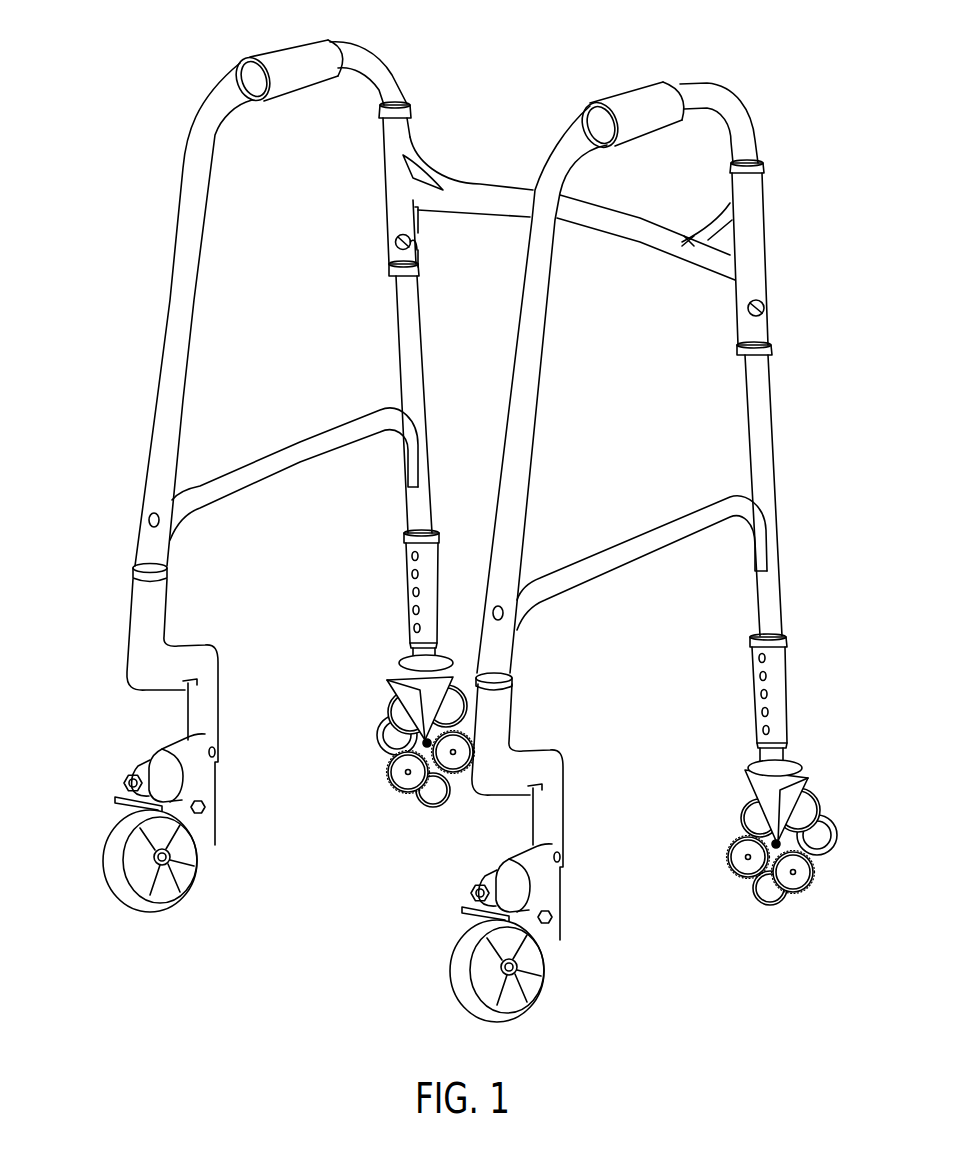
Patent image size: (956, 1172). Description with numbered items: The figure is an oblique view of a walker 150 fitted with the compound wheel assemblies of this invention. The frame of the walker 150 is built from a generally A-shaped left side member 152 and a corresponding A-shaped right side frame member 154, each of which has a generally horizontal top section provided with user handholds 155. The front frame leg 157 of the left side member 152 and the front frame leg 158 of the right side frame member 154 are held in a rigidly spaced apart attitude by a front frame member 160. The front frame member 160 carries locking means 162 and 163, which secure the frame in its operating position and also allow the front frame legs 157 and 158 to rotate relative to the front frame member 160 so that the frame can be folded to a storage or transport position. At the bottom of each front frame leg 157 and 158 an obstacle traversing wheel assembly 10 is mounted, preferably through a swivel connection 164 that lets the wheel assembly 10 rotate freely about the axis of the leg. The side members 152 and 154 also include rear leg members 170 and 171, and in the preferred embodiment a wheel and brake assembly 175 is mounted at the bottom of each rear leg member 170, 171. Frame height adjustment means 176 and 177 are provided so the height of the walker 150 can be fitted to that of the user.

The obstacle traversing wheel assembly 10 is at (601, 769).
The walker 150 is at (784, 300).
The left side member 152 is at (369, 53).
The right side frame member 154 is at (722, 98).
The user handholds 155 is at (300, 44).
The front frame leg 157 is at (413, 330).
The front frame leg 158 is at (762, 403).
The front frame member 160 is at (503, 195).
The locking means 162 is at (416, 243).
The locking means 163 is at (765, 313).
The swivel connection 164 is at (408, 663).
The rear leg member 170 is at (188, 323).
The rear leg member 171 is at (537, 370).
The wheel and brake assembly 175 is at (107, 857).
The frame height adjustment means 176 is at (430, 580).
The frame height adjustment means 177 is at (167, 608).